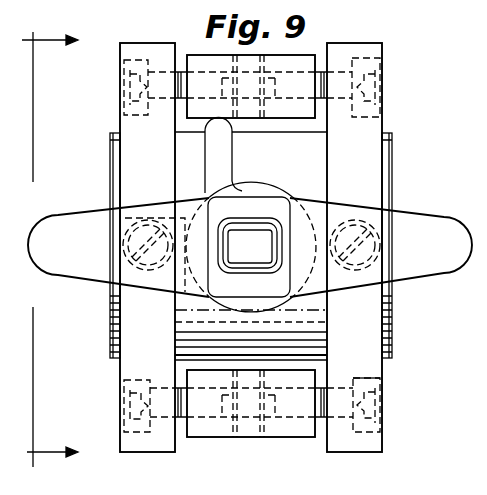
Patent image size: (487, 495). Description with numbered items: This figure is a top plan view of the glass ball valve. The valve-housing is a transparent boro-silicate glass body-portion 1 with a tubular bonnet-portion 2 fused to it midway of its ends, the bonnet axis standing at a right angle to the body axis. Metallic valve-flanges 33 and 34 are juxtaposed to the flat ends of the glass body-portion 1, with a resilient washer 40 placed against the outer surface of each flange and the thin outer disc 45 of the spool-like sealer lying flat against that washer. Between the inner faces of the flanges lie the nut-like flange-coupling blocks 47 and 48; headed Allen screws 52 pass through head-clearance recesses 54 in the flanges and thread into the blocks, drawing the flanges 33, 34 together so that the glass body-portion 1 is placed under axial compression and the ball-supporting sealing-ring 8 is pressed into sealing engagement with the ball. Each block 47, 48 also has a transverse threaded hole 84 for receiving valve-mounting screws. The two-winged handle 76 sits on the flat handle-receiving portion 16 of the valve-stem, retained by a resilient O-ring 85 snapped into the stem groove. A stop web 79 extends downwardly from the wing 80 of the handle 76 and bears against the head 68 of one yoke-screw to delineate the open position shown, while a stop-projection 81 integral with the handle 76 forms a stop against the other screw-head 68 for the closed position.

The tubular body-portion 1 is at (185, 340).
The bonnet-portion 2 is at (276, 193).
The ball-supporting sealing-ring 8 is at (58, 249).
The outer flat handle-receiving portion 16 is at (248, 262).
The metallic valve-flange 33 is at (148, 442).
The metallic valve-flange 34 is at (370, 446).
The resilient washer 40 is at (118, 132).
The thin outer disc 45 is at (110, 157).
The flange-coupling block 47 is at (296, 433).
The flange-coupling block 48 is at (300, 60).
The headed Allen screw 52 is at (378, 64).
The head-clearance recess 54 is at (365, 378).
The screw-head 68 is at (140, 243).
The two-winged handle 76 is at (440, 267).
The stop web 79 is at (125, 218).
The wing 80 is at (68, 268).
The stop-projection 81 is at (224, 141).
The transverse threaded hole 84 is at (254, 433).
The resilient O-ring 85 is at (246, 225).